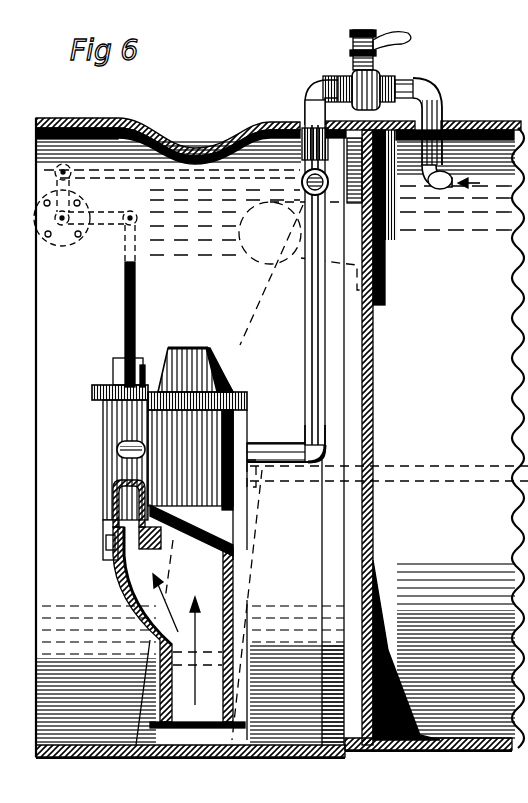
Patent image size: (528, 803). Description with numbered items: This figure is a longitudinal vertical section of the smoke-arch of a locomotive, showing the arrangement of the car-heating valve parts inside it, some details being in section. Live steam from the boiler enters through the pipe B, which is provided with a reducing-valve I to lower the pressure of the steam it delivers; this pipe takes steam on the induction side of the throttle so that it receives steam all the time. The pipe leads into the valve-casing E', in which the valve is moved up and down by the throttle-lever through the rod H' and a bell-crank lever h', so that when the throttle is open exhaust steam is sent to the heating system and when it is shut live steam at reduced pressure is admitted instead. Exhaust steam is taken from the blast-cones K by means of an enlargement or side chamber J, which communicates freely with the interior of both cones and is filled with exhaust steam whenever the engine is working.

The live-steam pipe B is at (300, 93).
The reducing-valve I is at (376, 60).
The bell-crank lever h' is at (85, 240).
The rod H' is at (120, 324).
The valve-casing E' is at (107, 480).
The side chamber J is at (112, 573).
The blast-cones K is at (238, 582).